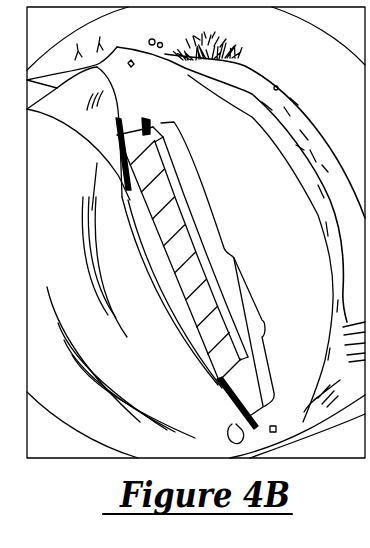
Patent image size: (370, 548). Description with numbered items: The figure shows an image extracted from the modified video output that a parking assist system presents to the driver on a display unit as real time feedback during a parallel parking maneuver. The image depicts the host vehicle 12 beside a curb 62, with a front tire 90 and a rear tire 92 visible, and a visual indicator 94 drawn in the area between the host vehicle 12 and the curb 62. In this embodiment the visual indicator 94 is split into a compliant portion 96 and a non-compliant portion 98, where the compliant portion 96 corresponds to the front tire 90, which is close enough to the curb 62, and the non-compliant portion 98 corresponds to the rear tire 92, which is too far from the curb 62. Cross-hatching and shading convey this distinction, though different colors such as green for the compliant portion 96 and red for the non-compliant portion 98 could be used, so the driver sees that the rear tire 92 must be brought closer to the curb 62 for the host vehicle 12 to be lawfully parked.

The host vehicle 12 is at (75, 77).
The front tire 90 is at (120, 132).
The visual indicator 94 is at (145, 123).
The curb 62 is at (178, 175).
The compliant portion 96 is at (203, 173).
The non-compliant portion 98 is at (261, 327).
The rear tire 92 is at (260, 414).